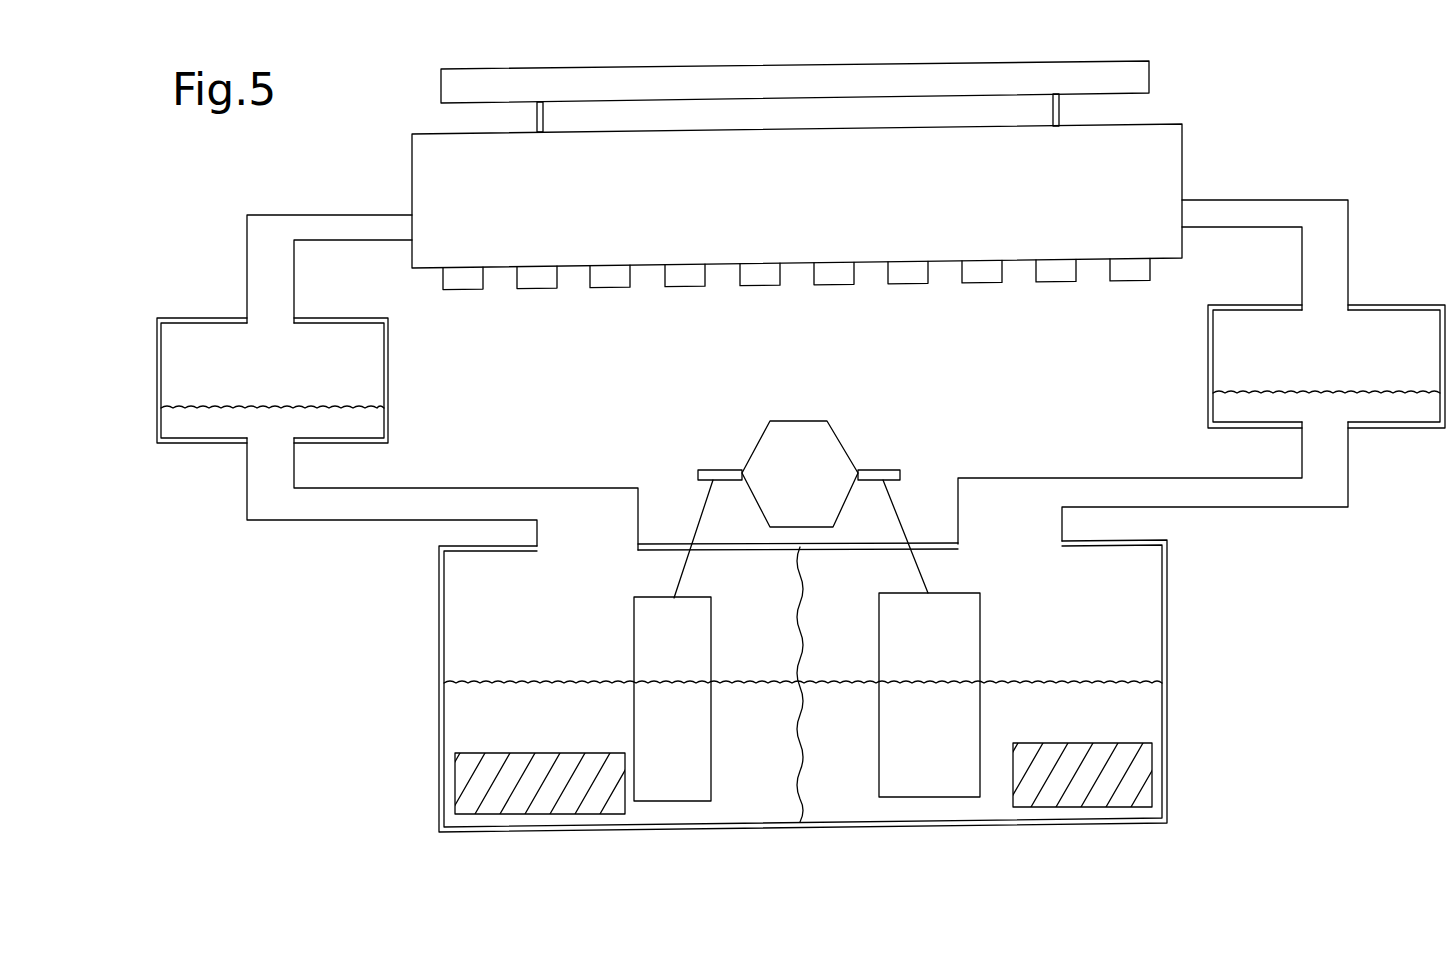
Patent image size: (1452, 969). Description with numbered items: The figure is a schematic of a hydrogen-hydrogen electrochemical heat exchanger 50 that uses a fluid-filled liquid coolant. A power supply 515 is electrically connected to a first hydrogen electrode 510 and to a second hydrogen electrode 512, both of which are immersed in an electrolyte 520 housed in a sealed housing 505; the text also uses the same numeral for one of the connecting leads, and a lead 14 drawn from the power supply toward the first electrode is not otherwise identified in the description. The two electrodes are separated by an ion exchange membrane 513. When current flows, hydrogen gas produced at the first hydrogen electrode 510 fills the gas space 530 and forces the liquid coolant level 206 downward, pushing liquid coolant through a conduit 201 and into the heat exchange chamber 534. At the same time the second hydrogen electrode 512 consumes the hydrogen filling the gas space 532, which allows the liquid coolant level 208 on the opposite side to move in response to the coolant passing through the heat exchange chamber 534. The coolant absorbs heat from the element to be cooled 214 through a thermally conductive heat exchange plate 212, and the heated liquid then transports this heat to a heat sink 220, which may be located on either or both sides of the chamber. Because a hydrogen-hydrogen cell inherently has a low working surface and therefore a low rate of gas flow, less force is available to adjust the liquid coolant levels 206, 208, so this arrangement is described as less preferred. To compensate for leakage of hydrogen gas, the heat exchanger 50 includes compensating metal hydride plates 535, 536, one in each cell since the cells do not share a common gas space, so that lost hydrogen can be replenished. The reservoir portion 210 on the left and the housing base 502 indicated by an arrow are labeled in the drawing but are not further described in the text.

The support rod 14 is at (700, 512).
The electrochemical heat exchanger 50 is at (1224, 180).
The conduit 201 is at (247, 255).
The liquid coolant level 206 is at (220, 410).
The liquid coolant level 208 is at (1390, 395).
The reservoir 210 is at (383, 360).
The heat exchange plate 212 is at (537, 120).
The element to be cooled 214 is at (1121, 62).
The heat sink 220 is at (1055, 280).
The base 502 is at (833, 835).
The sealed housing 505 is at (1167, 752).
The first hydrogen electrode 510 is at (672, 782).
The second hydrogen electrode 512 is at (921, 775).
The ion exchange membrane 513 is at (803, 772).
The power supply 515 is at (818, 490).
The electrolyte 520 is at (905, 525).
The gas space 530 is at (580, 527).
The gas space 532 is at (1005, 517).
The heat exchange chamber 534 is at (812, 226).
The compensating metal hydride plate 535 is at (475, 780).
The compensating metal hydride plate 536 is at (1085, 795).